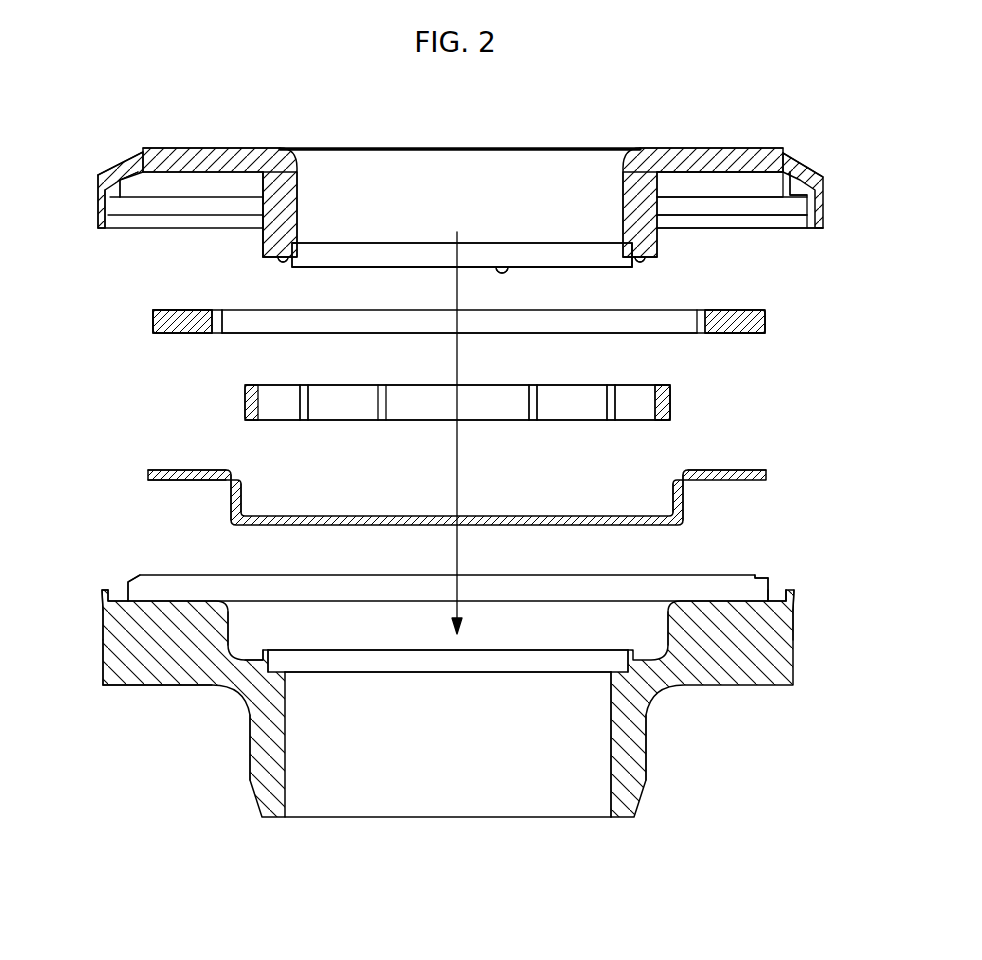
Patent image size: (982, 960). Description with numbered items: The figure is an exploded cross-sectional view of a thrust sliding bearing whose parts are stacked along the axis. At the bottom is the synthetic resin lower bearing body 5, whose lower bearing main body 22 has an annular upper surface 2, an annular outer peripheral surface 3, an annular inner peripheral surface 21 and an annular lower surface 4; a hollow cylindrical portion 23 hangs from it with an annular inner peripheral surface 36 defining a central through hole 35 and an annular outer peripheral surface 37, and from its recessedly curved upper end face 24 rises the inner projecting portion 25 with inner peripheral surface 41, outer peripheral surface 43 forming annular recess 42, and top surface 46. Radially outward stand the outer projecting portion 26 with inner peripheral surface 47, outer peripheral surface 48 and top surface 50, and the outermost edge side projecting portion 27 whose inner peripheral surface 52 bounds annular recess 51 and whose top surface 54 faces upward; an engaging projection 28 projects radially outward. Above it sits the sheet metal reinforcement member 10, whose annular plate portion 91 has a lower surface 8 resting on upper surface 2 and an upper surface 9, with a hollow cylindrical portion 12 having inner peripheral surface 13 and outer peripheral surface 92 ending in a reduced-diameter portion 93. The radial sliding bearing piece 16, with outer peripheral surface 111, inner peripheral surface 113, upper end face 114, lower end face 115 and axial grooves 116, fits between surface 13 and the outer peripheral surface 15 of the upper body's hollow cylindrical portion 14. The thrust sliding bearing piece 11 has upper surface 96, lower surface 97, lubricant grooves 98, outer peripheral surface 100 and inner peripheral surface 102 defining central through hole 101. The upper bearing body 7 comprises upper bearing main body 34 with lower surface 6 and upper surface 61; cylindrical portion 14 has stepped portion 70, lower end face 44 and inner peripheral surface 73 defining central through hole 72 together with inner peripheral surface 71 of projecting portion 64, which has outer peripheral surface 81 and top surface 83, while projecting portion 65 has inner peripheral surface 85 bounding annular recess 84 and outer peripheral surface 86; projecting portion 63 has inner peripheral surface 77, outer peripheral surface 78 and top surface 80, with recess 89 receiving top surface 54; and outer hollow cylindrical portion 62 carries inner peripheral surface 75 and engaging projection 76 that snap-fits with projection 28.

The annular upper surface 2 is at (191, 575).
The annular outer peripheral surface 3 is at (794, 660).
The annular lower surface 4 is at (171, 687).
The annular bearing body 5 is at (799, 591).
The annular lower surface 6 is at (700, 182).
The annular bearing body 7 is at (166, 148).
The annular lower surface 8 is at (745, 482).
The annular upper surface 9 is at (160, 469).
The reinforcement member 10 is at (199, 470).
The thrust sliding bearing piece 11 is at (767, 321).
The hollow cylindrical portion 12 is at (231, 500).
The annular inner peripheral surface 13 is at (671, 505).
The hollow cylindrical portion 14 is at (291, 214).
The annular outer peripheral surface 15 is at (256, 194).
The radial sliding bearing piece 16 is at (671, 394).
The annular inner peripheral surface 21 is at (229, 626).
The lower bearing main body 22 is at (145, 652).
The hollow cylindrical portion 23 is at (257, 757).
The recessedly curved upper end face 24 is at (660, 655).
The inner projecting portion 25 is at (393, 650).
The outer projecting portion 26 is at (140, 578).
The outermost edge side projecting portion 27 is at (104, 596).
The engaging projection 28 is at (800, 612).
The upper bearing main body 34 is at (735, 147).
The central through hole 35 is at (457, 820).
The annular inner peripheral surface 36 is at (612, 760).
The annular outer peripheral surface 37 is at (648, 748).
The annular inner peripheral surface 41 is at (500, 652).
The annular recess 42 is at (265, 656).
The annular outer peripheral surface 43 is at (628, 655).
The lower end face 44 is at (300, 242).
The annular top surface 46 is at (530, 652).
The annular inner peripheral surface 47 is at (745, 577).
The outer peripheral surface 48 is at (782, 588).
The annular top surface 50 is at (766, 580).
The annular recess 51 is at (120, 588).
The annular inner peripheral surface 52 is at (795, 591).
The annular top surface 54 is at (105, 588).
The annular upper surface 61 is at (202, 147).
The outer hollow cylindrical portion 62 is at (98, 199).
The annular projecting portion 63 is at (787, 192).
The annular projecting portion 64 is at (427, 250).
The annular projecting portion 65 is at (655, 247).
The stepped portion 70 is at (651, 190).
The inner peripheral surface 71 is at (294, 257).
The central through hole 72 is at (500, 147).
The annular inner peripheral surface 73 is at (393, 147).
The annular inner peripheral surface 75 is at (113, 215).
The engaging projection 76 is at (813, 228).
The inner peripheral surface 77 is at (145, 150).
The outer peripheral surface 78 is at (811, 198).
The top surface 80 is at (767, 200).
The outer peripheral surface 81 is at (645, 262).
The annular top surface 83 is at (502, 262).
The annular recess 84 is at (640, 247).
The inner peripheral surface 85 is at (280, 262).
The outer peripheral surface 86 is at (266, 254).
The annular recess 89 is at (120, 190).
The annular plate portion 91 is at (736, 469).
The annular outer peripheral surface 92 is at (681, 503).
The reduced-diameter portion 93 is at (243, 516).
The annular upper surface 96 is at (164, 310).
The annular lower surface 97 is at (735, 334).
The radially extending grooves 98 is at (186, 333).
The annular outer peripheral surface 100 is at (153, 322).
The central through hole 101 is at (660, 334).
The annular inner peripheral surface 102 is at (222, 334).
The annular outer peripheral surface 111 is at (668, 410).
The annular inner peripheral surface 113 is at (419, 415).
The annular upper end face 114 is at (494, 386).
The lower end face 115 is at (498, 420).
The grooves 116 is at (452, 390).